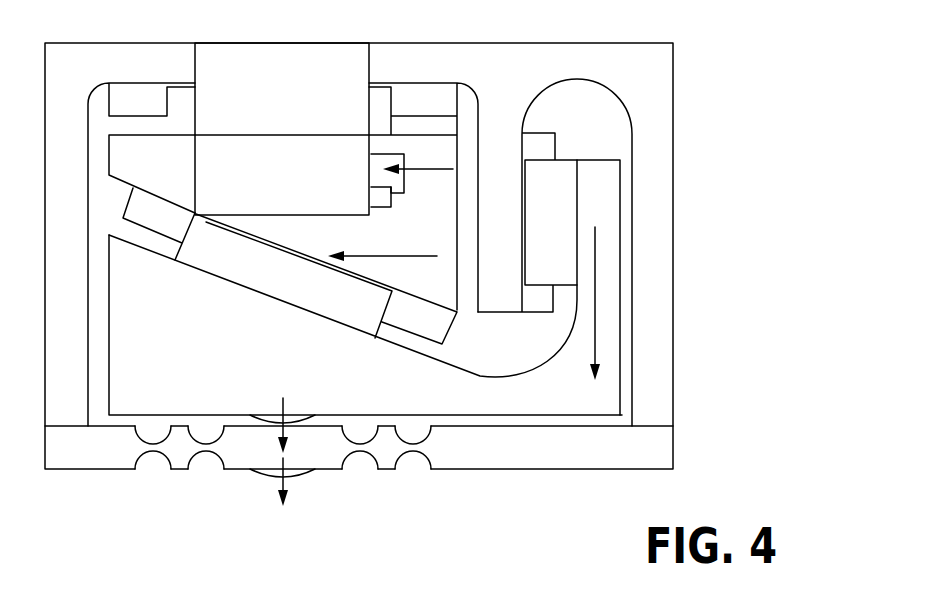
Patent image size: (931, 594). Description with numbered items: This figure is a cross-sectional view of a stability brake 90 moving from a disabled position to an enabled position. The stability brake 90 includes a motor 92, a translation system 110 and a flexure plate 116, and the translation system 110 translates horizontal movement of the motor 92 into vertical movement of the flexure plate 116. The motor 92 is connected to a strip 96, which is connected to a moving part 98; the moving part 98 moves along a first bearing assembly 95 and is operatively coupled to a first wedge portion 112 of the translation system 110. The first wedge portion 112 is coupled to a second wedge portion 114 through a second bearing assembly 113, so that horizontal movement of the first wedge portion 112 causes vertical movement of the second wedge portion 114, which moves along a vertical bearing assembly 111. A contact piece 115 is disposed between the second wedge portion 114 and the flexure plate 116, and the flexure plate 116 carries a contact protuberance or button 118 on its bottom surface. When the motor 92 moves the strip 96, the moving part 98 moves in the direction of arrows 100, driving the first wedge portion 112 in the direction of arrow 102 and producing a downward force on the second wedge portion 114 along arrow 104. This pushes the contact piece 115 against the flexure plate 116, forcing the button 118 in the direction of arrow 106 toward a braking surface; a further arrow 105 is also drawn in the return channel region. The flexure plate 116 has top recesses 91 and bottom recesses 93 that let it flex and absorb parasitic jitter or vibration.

The stability brake 90 is at (700, 31).
The top recesses 91 is at (283, 433).
The motor 92 is at (290, 103).
The bottom recesses 93 is at (283, 469).
The first bearing assembly 95 is at (142, 66).
The strip 96 is at (371, 193).
The moving part 98 is at (393, 154).
The arrows 100 is at (423, 169).
The arrow 102 is at (351, 244).
The arrow 104 is at (285, 400).
The fluid flow through return channel 105 is at (594, 332).
The arrow 106 is at (296, 487).
The translation system 110 is at (108, 197).
The vertical bearing assembly 111 is at (544, 114).
The first wedge portion 112 is at (182, 174).
The second bearing assembly 113 is at (274, 322).
The second wedge portion 114 is at (175, 315).
The contact piece 115 is at (263, 418).
The flexure plate 116 is at (674, 447).
The contact protuberance or button 118 is at (267, 478).